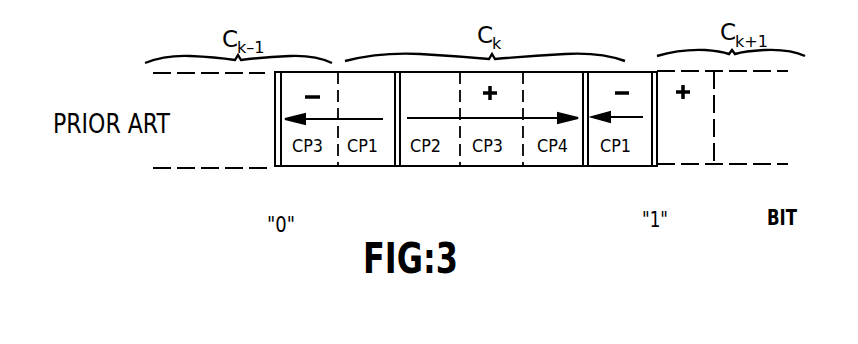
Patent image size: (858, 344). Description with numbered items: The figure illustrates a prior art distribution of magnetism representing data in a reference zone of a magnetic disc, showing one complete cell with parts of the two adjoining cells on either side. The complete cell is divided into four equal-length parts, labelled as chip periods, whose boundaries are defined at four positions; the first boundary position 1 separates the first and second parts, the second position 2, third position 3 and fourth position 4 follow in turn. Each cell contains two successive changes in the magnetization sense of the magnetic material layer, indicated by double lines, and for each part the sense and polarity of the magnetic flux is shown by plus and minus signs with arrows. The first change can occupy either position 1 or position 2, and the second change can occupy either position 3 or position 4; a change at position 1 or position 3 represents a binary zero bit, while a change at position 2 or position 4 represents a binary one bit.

The clock phase P1 boundary 1 is at (532, 134).
The clock phase P2 boundary 2 is at (467, 134).
The clock phase P3 boundary 3 is at (408, 134).
The clock phase P4 boundary 4 is at (592, 134).